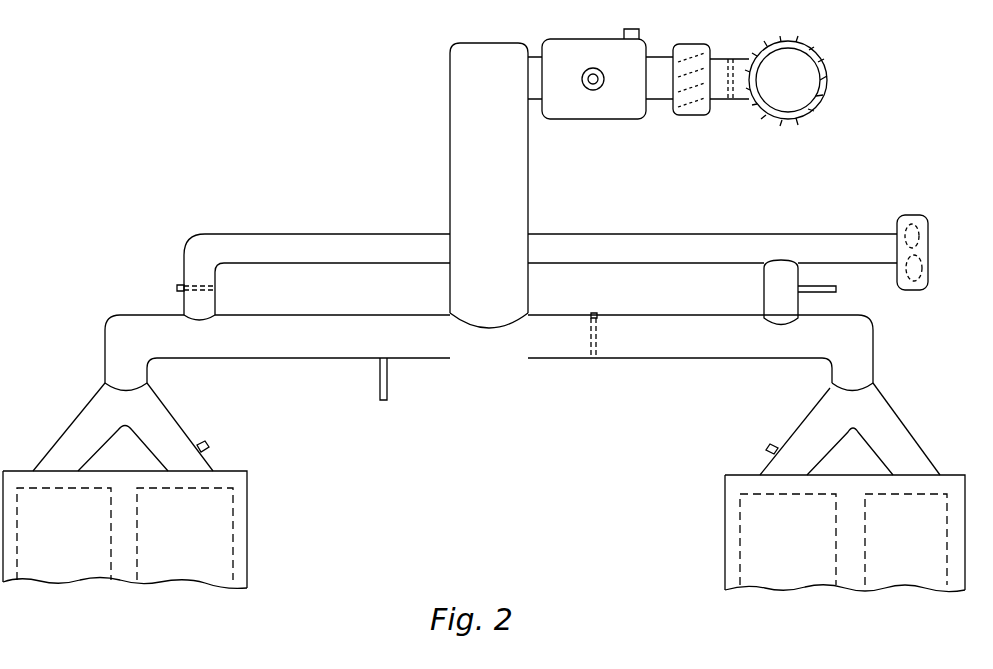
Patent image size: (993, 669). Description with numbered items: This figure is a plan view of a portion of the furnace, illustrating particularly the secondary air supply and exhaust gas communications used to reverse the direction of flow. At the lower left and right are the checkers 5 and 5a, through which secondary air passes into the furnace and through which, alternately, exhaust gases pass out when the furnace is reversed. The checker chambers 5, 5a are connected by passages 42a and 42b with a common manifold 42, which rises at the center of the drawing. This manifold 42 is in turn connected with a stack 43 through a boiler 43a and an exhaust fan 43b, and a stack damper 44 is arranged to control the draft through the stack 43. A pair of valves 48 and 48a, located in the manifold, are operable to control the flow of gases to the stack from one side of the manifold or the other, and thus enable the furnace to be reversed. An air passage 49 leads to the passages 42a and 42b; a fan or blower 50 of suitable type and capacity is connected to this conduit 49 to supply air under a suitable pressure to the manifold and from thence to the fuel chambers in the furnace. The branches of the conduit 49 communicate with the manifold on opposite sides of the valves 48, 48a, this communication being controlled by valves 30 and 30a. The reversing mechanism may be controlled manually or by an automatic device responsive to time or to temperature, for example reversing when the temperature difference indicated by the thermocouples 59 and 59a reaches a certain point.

The manifold 42 is at (450, 157).
The passage 42a is at (546, 360).
The passage 42b is at (223, 359).
The stack 43 is at (827, 74).
The boiler 43a is at (612, 120).
The exhaust fan 43b is at (697, 116).
The stack damper 44 is at (733, 58).
The valve 48 is at (598, 314).
The valve 48a is at (380, 391).
The air passage 49 is at (320, 218).
The fan or blower 50 is at (930, 233).
The valve 30 is at (836, 292).
The valve 30a is at (177, 288).
The thermocouple 59 is at (772, 447).
The thermocouple 59a is at (207, 447).
The checker 5 is at (80, 570).
The checker 5a is at (193, 572).